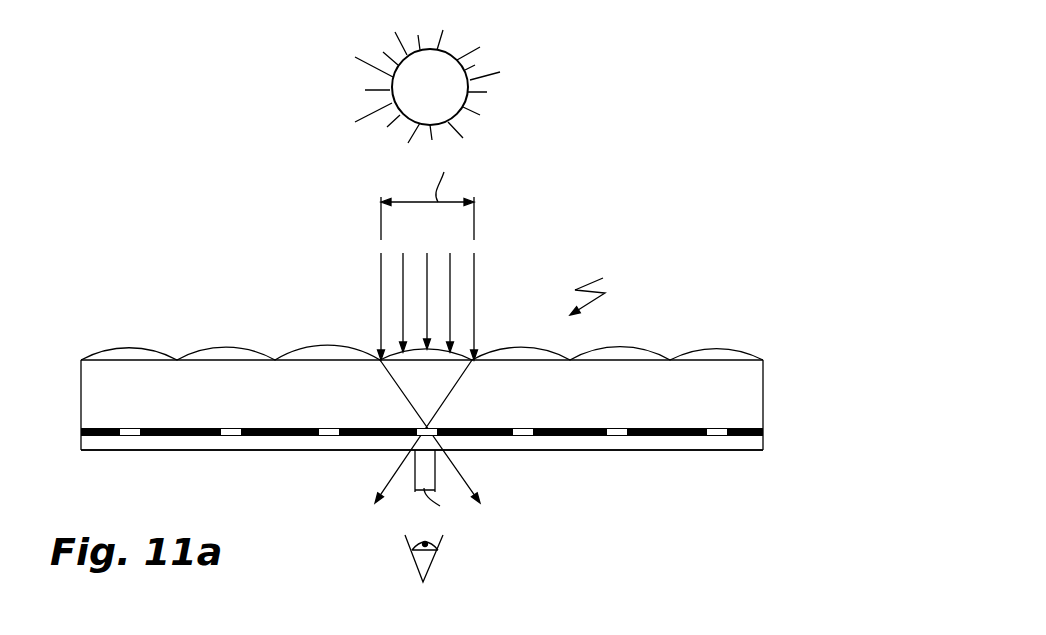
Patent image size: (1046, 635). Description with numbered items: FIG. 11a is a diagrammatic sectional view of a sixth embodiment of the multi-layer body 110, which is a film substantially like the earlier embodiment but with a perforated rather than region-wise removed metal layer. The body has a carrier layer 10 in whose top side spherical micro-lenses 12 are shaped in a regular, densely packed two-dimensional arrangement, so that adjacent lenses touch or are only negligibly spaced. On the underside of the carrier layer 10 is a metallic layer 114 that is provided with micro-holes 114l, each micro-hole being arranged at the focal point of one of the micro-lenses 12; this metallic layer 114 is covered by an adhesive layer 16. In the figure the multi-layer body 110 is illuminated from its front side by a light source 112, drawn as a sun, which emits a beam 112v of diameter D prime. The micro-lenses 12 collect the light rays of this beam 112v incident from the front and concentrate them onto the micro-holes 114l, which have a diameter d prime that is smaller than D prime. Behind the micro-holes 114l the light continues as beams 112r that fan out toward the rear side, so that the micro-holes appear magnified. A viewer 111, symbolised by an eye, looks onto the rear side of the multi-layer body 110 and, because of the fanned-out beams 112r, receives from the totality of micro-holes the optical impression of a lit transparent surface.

The light source 112 is at (468, 101).
The beam 112v is at (473, 285).
The beams 112r is at (463, 476).
The multi-layer body 110 is at (613, 289).
The carrier layer 10 is at (756, 372).
The micro-lenses 12 is at (308, 352).
The metallic layer 114 is at (763, 430).
The micro-holes 114l is at (330, 436).
The adhesive layer 16 is at (756, 443).
The viewer 111 is at (430, 560).